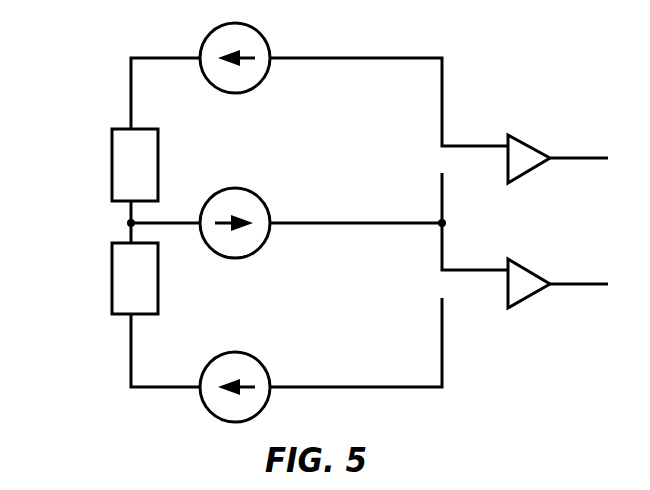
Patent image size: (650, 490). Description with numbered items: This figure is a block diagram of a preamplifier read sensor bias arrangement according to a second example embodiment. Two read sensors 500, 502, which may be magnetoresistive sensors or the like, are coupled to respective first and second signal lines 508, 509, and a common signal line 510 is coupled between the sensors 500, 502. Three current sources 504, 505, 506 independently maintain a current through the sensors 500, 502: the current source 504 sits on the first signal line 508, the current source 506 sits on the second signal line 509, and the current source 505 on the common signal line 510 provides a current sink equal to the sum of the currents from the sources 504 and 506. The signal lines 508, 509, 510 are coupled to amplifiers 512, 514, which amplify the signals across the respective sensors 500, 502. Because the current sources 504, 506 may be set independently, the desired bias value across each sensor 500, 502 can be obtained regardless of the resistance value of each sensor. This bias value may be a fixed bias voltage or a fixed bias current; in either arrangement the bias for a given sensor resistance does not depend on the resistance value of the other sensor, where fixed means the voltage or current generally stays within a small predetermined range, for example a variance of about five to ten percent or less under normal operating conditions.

The read sensor 500 is at (112, 157).
The read sensor 502 is at (112, 283).
The current source 504 is at (247, 95).
The current source 505 is at (257, 190).
The current source 506 is at (235, 352).
The first signal line 508 is at (131, 76).
The second signal line 509 is at (131, 382).
The common signal line 510 is at (188, 220).
The amplifier 512 is at (523, 140).
The amplifier 514 is at (523, 268).